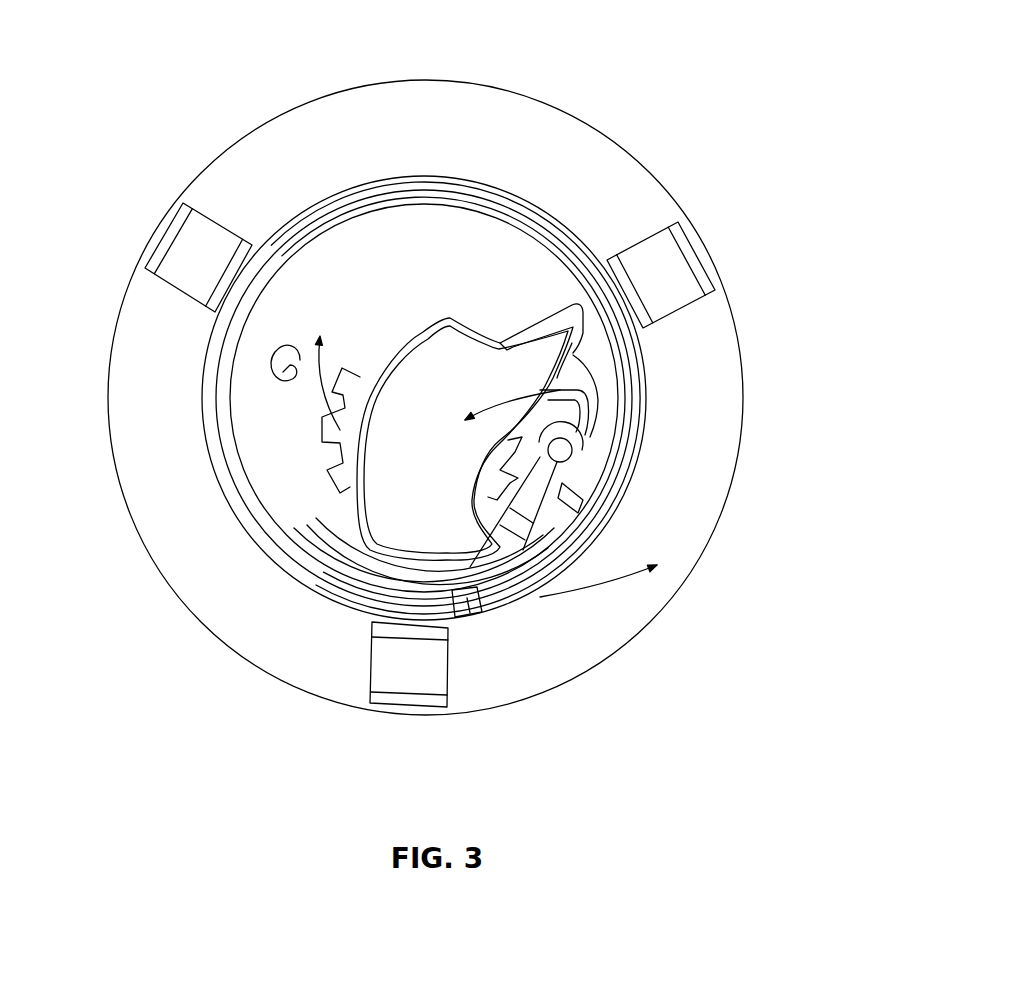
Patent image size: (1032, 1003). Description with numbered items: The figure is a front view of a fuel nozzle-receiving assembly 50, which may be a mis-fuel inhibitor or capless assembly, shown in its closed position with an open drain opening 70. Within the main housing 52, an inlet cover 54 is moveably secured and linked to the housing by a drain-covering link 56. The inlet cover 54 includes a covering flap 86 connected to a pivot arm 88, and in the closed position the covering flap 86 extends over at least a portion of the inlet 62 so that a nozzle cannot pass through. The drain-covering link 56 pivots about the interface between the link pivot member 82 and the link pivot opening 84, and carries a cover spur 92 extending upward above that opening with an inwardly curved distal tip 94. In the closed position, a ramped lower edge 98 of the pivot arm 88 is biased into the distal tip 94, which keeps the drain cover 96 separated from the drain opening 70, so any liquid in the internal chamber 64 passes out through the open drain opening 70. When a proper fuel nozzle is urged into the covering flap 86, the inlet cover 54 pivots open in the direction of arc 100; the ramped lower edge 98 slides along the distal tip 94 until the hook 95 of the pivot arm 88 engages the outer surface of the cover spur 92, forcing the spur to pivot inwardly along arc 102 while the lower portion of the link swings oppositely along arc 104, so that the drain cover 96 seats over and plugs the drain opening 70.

The fuel nozzle-receiving assembly 50 is at (677, 108).
The main housing 52 is at (750, 368).
The inlet cover 54 is at (447, 343).
The drain-covering link 56 is at (574, 450).
The inlet 62 is at (370, 385).
The internal chamber 64 is at (462, 242).
The drain opening 70 is at (467, 600).
The link pivot member 82 is at (580, 397).
The link pivot opening 84 is at (568, 468).
The covering flap 86 is at (423, 383).
The pivot arm 88 is at (568, 303).
The cover spur 92 is at (582, 373).
The distal tip 94 is at (592, 348).
The hook 95 is at (600, 310).
The drain cover 96 is at (427, 567).
The ramped lower edge 98 is at (583, 333).
The arc 100 is at (388, 443).
The arc 102 is at (518, 400).
The arc 104 is at (603, 593).